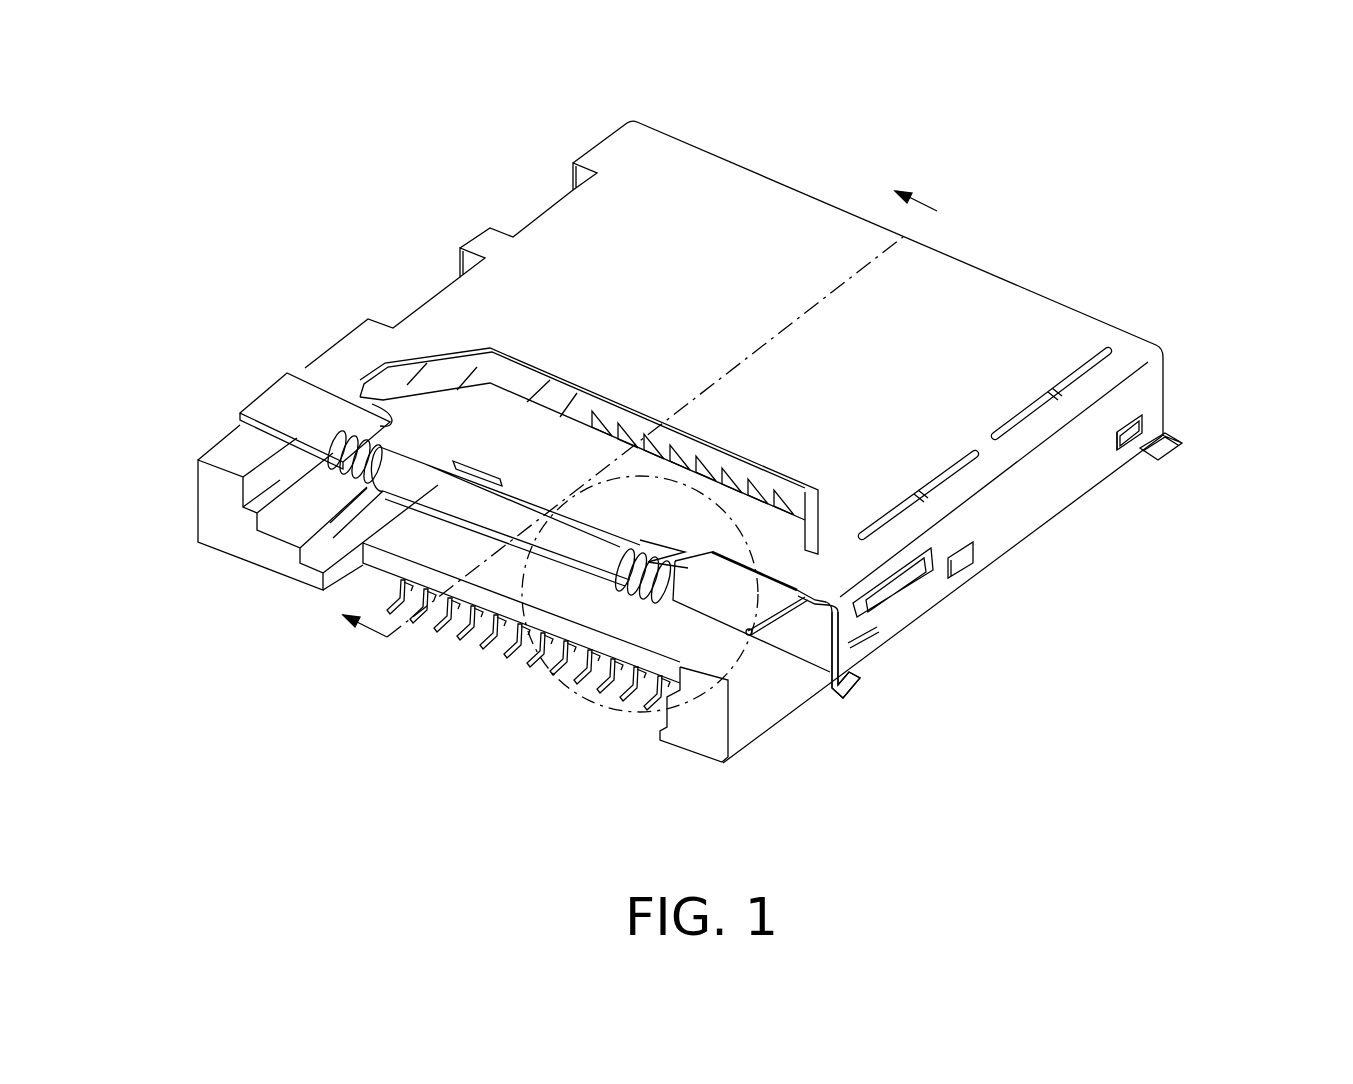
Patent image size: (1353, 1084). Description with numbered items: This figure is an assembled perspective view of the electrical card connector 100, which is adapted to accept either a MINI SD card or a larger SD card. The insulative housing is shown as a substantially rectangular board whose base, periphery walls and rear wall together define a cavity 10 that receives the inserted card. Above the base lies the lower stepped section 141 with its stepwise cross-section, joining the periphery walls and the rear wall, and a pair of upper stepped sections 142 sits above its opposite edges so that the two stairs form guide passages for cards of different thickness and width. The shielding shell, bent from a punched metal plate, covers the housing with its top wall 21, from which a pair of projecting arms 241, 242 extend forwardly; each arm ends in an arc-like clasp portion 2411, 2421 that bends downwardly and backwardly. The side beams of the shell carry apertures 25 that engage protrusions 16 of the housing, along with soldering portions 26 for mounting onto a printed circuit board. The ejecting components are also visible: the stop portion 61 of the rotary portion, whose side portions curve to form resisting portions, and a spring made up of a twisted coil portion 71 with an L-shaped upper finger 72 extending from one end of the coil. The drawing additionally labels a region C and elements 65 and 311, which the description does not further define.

The electrical card connector 100 is at (714, 76).
The cavity 10 is at (640, 416).
The top wall 21 is at (734, 442).
The stop portion 61 is at (800, 536).
The L-shaped upper finger 72 is at (480, 488).
The twisted coil portion 71 is at (358, 440).
The projecting arm 242 is at (267, 415).
The arc-like clasp portion 2421 is at (250, 413).
The upper stepped sections 142 is at (253, 503).
The lower stepped section 141 is at (280, 527).
The housing base 65 is at (365, 563).
The soldering portions of contacts 311 is at (520, 650).
The detail circle C is at (598, 705).
The arc-like clasp portion 2411 is at (710, 593).
The projecting arm 241 is at (845, 618).
The protrusions 16 is at (1132, 452).
The apertures 25 is at (1143, 418).
The soldering portions 26 is at (1183, 445).